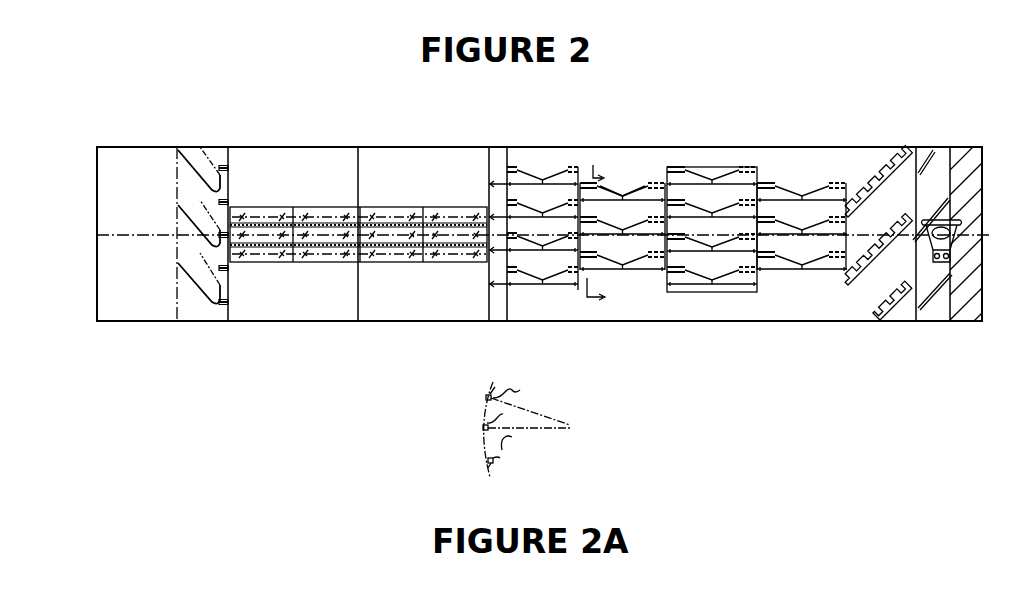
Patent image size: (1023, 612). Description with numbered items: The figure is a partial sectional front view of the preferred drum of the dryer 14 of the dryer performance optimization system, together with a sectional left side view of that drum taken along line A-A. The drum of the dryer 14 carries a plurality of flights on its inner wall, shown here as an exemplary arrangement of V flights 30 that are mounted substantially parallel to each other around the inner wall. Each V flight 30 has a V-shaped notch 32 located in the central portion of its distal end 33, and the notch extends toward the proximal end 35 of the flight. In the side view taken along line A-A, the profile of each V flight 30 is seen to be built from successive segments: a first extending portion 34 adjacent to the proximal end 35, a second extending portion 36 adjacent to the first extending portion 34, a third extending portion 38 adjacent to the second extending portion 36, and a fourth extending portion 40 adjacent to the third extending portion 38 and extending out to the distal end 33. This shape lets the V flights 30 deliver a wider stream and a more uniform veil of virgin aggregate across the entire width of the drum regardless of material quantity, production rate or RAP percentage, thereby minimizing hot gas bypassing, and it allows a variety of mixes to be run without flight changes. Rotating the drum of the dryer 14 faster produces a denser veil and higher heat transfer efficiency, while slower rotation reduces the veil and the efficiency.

In FIG. 2, the dryer 14 is at (858, 150).
In FIG. 2, the V flight 30 is at (648, 185).
In FIG. 2A, the V flight 30 is at (500, 458).
In FIG. 2, the V-shaped notch 32 is at (622, 190).
In FIG. 2, the distal end 33 is at (745, 167).
In FIG. 2A, the distal end 33 is at (513, 382).
In FIG. 2A, the first extending portion 34 is at (493, 467).
In FIG. 2, the proximal end 35 is at (745, 292).
In FIG. 2A, the proximal end 35 is at (475, 428).
In FIG. 2A, the second extending portion 36 is at (491, 398).
In FIG. 2A, the third extending portion 38 is at (520, 390).
In FIG. 2A, the fourth extending portion 40 is at (512, 437).